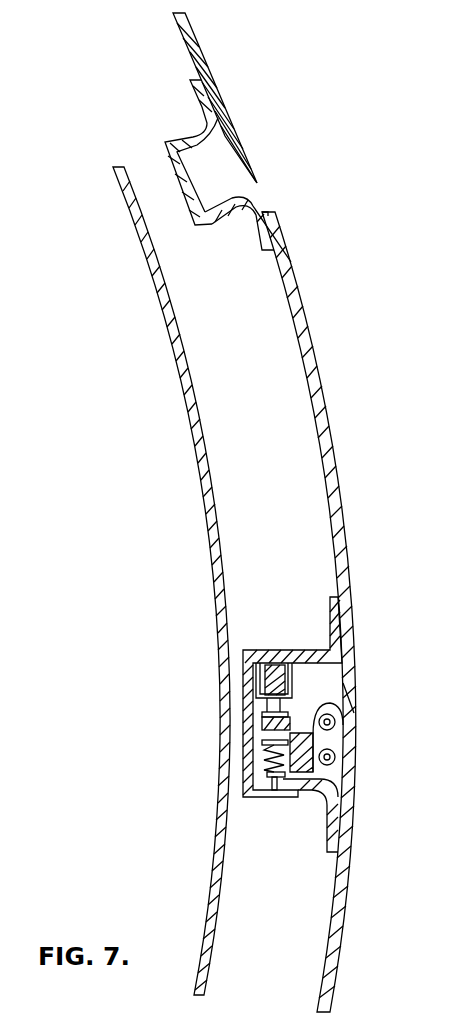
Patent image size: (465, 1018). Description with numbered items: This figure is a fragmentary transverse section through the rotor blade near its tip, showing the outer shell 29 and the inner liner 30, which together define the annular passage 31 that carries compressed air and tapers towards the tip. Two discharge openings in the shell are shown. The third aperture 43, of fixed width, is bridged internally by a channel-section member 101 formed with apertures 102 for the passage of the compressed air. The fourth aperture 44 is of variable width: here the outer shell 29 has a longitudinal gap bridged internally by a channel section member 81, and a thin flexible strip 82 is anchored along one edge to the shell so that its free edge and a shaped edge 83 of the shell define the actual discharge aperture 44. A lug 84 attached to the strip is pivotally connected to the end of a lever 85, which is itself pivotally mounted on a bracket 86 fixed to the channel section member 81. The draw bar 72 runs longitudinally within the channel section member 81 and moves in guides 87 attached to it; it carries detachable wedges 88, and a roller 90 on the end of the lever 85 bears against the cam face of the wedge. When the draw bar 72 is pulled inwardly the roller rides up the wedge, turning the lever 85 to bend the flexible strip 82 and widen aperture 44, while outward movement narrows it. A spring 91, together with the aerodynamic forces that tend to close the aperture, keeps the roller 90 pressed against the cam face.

The outer shell 29 is at (330, 423).
The inner liner 30 is at (211, 557).
The annular passage 31 is at (277, 506).
The third aperture 43 is at (258, 193).
The fourth aperture 44 is at (353, 717).
The draw bar 72 is at (262, 667).
The channel section member 81 is at (283, 650).
The flexible strip 82 is at (352, 806).
The shaped edge 83 is at (356, 714).
The lug 84 is at (337, 723).
The lever 85 is at (337, 755).
The bracket 86 is at (300, 797).
The guide 87 is at (290, 678).
The wedge 88 is at (262, 714).
The roller 90 is at (265, 733).
The spring 91 is at (265, 769).
The channel-section member 101 is at (215, 213).
The apertures 102 is at (185, 183).